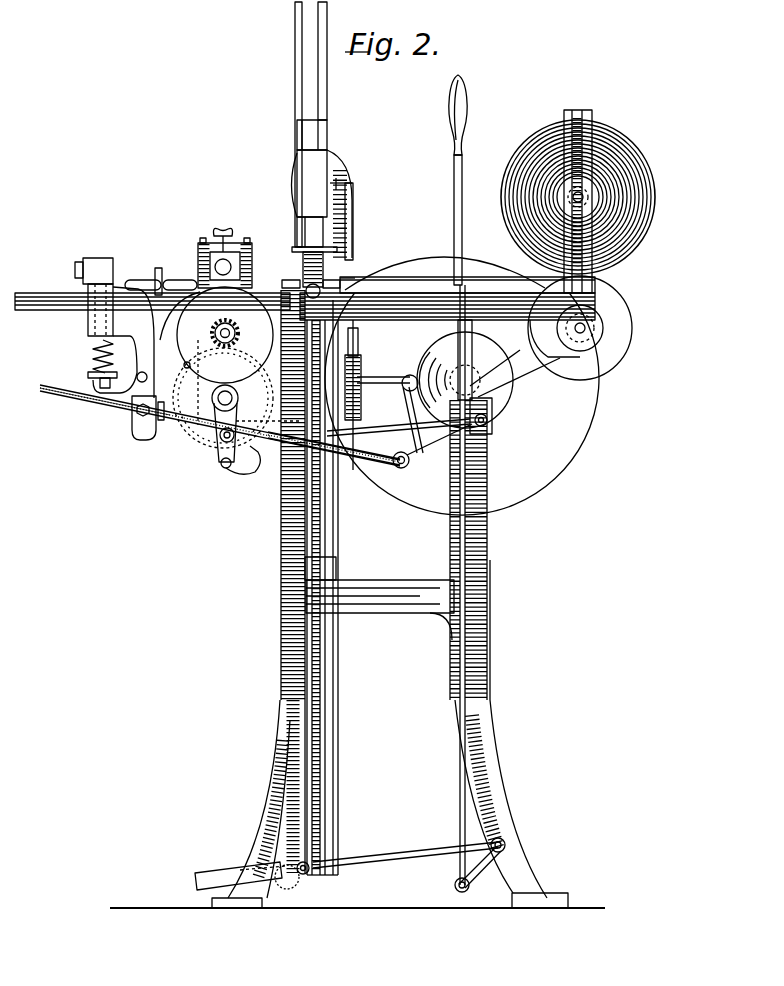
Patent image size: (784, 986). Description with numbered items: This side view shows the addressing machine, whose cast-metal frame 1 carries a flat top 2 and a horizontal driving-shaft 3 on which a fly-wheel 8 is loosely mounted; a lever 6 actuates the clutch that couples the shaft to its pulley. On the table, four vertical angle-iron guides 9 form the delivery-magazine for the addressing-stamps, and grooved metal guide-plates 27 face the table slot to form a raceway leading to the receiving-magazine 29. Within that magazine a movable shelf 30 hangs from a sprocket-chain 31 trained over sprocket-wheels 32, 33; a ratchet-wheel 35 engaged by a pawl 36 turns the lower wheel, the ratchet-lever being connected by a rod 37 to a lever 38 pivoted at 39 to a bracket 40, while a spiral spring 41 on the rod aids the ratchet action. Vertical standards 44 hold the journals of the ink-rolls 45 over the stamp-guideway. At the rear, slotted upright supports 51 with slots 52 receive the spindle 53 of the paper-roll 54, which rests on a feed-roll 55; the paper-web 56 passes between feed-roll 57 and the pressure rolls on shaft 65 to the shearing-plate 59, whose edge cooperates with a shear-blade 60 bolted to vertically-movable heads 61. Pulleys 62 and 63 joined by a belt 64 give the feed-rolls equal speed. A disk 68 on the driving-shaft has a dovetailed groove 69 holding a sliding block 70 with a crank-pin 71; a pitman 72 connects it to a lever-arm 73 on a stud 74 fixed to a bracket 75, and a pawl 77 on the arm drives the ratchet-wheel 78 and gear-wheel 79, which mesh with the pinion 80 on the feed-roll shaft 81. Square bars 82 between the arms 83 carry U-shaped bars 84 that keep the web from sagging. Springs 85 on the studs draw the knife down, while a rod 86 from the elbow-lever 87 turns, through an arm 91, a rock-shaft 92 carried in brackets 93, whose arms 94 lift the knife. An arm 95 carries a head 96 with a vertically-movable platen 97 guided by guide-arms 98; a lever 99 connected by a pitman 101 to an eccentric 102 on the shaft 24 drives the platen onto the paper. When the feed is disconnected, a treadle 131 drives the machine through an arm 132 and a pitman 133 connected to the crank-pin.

The frame 1 is at (488, 654).
The flat top 2 is at (590, 283).
The driving-shaft 3 is at (489, 403).
The lever 6 is at (471, 480).
The fly-wheel 8 is at (582, 437).
The vertical angle-iron guides 9 is at (298, 84).
The shaft 24 is at (385, 365).
The guide-plates 27 is at (335, 289).
The receiving-magazine 29 is at (336, 543).
The movable shelf 30 is at (338, 558).
The sprocket-chain 31 is at (320, 662).
The sprocket-wheel 32 is at (372, 278).
The sprocket-wheel 33 is at (318, 880).
The ratchet-wheel 35 is at (294, 888).
The pawl 36 is at (278, 868).
The rod 37 is at (280, 690).
The lever 38 is at (380, 386).
The pivot 39 is at (395, 378).
The bracket 40 is at (435, 320).
The spiral spring 41 is at (280, 499).
The vertical standards 44 is at (293, 252).
The ink-rolls 45 is at (302, 264).
The upright supports 51 is at (584, 115).
The slots 52 is at (574, 115).
The spindle 53 is at (584, 195).
The paper-roll 54 is at (656, 212).
The feed-roll 55 is at (627, 322).
The paper-web 56 is at (475, 280).
The feed-roll 57 is at (185, 342).
The shearing-plate 59 is at (98, 292).
The shear-blade 60 is at (80, 262).
The vertically-movable heads 61 is at (100, 260).
The pulley 62 is at (592, 332).
The pulley 63 is at (205, 340).
The belt 64 is at (534, 360).
The shaft 65 is at (225, 262).
The disk 68 is at (500, 420).
The dovetailed groove 69 is at (478, 350).
The sliding block 70 is at (493, 425).
The crank-pin 71 is at (447, 442).
The pitman 72 is at (432, 420).
The lever-arm 73 is at (222, 457).
The stud 74 is at (218, 399).
The bracket 75 is at (200, 260).
The pawl 77 is at (243, 466).
The ratchet-wheel 78 is at (197, 425).
The gear-wheel 79 is at (185, 367).
The pinion 80 is at (210, 330).
The shaft 81 is at (228, 333).
The square bars 82 is at (158, 270).
The arms 83 is at (40, 296).
The U-shaped bars 84 is at (175, 282).
The springs 85 is at (96, 355).
The rod 86 is at (52, 392).
The elbow-lever 87 is at (403, 468).
The arm 91 is at (142, 425).
The rock-shaft 92 is at (137, 382).
The brackets 93 is at (140, 372).
The arms 94 is at (104, 406).
The arm 95 is at (340, 170).
The head 96 is at (312, 187).
The platen 97 is at (305, 230).
The guide-arms 98 is at (315, 137).
The lever 99 is at (348, 183).
The pitman 101 is at (358, 332).
The eccentric 102 is at (355, 458).
The treadle 131 is at (405, 846).
The arm 132 is at (520, 860).
The pitman 133 is at (468, 592).